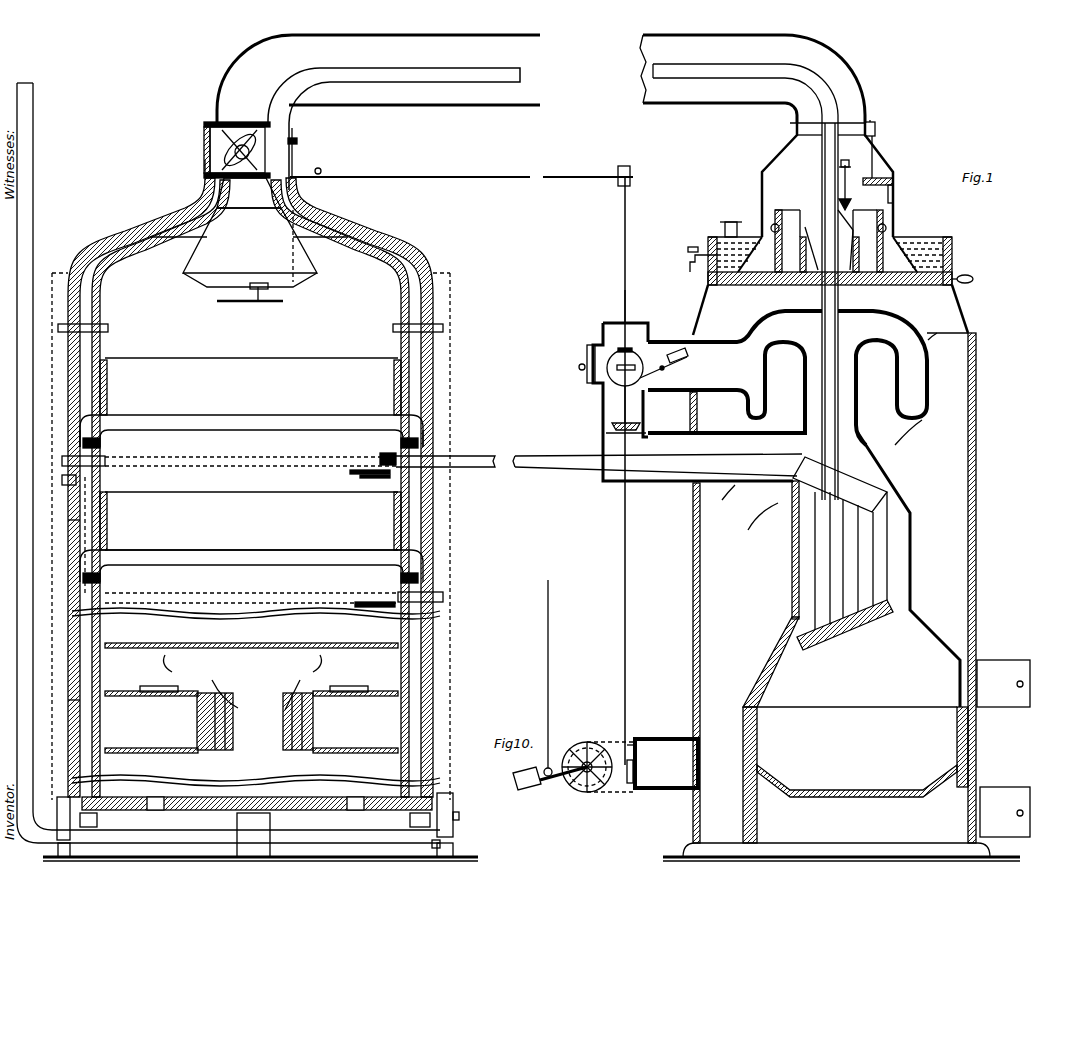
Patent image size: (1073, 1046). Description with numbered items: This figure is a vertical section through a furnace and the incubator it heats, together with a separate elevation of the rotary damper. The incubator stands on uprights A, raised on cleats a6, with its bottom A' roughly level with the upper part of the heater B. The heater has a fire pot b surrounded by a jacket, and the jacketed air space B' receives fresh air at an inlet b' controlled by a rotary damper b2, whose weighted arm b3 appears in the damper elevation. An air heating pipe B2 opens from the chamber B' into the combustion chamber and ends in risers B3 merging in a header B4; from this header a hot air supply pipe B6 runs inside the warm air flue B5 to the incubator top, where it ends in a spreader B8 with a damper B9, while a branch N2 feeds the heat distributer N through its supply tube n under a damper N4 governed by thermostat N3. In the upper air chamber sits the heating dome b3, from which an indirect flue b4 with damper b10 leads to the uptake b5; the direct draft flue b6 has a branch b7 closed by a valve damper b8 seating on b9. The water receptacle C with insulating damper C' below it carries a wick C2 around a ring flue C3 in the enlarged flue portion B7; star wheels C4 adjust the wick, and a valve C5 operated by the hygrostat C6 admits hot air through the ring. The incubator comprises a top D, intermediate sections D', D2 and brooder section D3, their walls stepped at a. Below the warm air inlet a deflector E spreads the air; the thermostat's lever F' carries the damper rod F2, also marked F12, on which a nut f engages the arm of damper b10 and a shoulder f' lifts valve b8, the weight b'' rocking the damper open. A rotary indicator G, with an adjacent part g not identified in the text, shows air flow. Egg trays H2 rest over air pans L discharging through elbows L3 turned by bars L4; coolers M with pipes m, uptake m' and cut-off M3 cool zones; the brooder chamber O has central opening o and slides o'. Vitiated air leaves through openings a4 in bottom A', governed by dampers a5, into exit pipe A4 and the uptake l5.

In FIG. 1, the supporting uprights A is at (458, 815).
In FIG. 1, the bottom of the incubator A' is at (257, 798).
In FIG. 1, the exit pipe A4 is at (150, 840).
In FIG. 1, the stepped inner wall portion a is at (100, 300).
In FIG. 1, the air outlet openings a4 is at (148, 780).
In FIG. 1, the dampers a5 is at (97, 820).
In FIG. 1, the cleats a6 is at (437, 848).
In FIG. 1, the heater B is at (846, 597).
In FIG. 1, the jacketed air space B' is at (746, 662).
In FIG. 1, the air heating pipe B2 is at (816, 645).
In FIG. 1, the risers B3 is at (850, 566).
In FIG. 1, the header B4 is at (840, 484).
In FIG. 1, the warm air flue B5 is at (400, 104).
In FIG. 1, the hot air supply pipe B6 is at (362, 78).
In FIG. 1, the enlarged flue portion B7 is at (760, 178).
In FIG. 1, the spreader B8 is at (226, 196).
In FIG. 1, the damper B9 is at (296, 134).
In FIG. 1, the fire pot b is at (862, 752).
In FIG. 1, the air supply inlet b' is at (662, 763).
In FIG. 1, the rotary damper b2 is at (640, 737).
In FIG. 10, the rotary damper b2 is at (590, 742).
In FIG. 1, the heating dome / weight b3 is at (620, 797).
In FIG. 10, the heating dome / weight b3 is at (527, 790).
In FIG. 1, the indirect flue b4 is at (735, 344).
In FIG. 1, the uptake b5 is at (636, 323).
In FIG. 1, the direct draft flue b6 is at (726, 397).
In FIG. 1, the branch b7 is at (612, 408).
In FIG. 1, the damper valve b8 is at (612, 427).
In FIG. 1, the seat b9 is at (636, 433).
In FIG. 1, the controlling damper b10 is at (662, 370).
In FIG. 1, the weight b'' is at (664, 347).
In FIG. 1, the water receptacle C is at (826, 249).
In FIG. 1, the insulating damper C' is at (845, 303).
In FIG. 1, the wick C2 is at (780, 210).
In FIG. 1, the ring-shaped flue C3 is at (803, 227).
In FIG. 1, the star wheels C4 is at (771, 227).
In FIG. 1, the hygrostatic valve C5 is at (852, 212).
In FIG. 1, the hygrostat C6 is at (876, 129).
In FIG. 1, the top section D is at (251, 489).
In FIG. 1, the intermediate section D' is at (240, 365).
In FIG. 1, the intermediate section D2 is at (70, 527).
In FIG. 1, the brooder section D3 is at (70, 700).
In FIG. 1, the deflector E is at (248, 247).
In FIG. 1, the actuating lever F' is at (425, 235).
In FIG. 1, the damper rod F2 is at (549, 650).
In FIG. 1, the damper rod F12 is at (624, 258).
In FIG. 1, the nut f is at (619, 340).
In FIG. 1, the shoulder f' is at (599, 438).
In FIG. 1, the rotary indicator G is at (210, 149).
In FIG. 1, the handle g is at (205, 166).
In FIG. 1, the egg trays H2 is at (250, 454).
In FIG. 1, the air pans L is at (218, 424).
In FIG. 1, the pipe elbows L3 is at (80, 424).
In FIG. 1, the bars L4 is at (100, 443).
In FIG. 1, the uptake l5 is at (20, 466).
In FIG. 1, the coolers M is at (280, 592).
In FIG. 1, the cut off M3 is at (362, 600).
In FIG. 1, the slidable pipes m is at (436, 601).
In FIG. 1, the uptake m' is at (112, 536).
In FIG. 1, the heat distributer N is at (282, 456).
In FIG. 1, the hot air supply pipe N2 is at (479, 456).
In FIG. 1, the thermostat N3 is at (368, 474).
In FIG. 1, the damper N4 is at (388, 454).
In FIG. 1, the supply tube n is at (62, 466).
In FIG. 1, the brooder chamber O is at (251, 698).
In FIG. 1, the central opening o is at (255, 721).
In FIG. 1, the slides o' is at (254, 678).